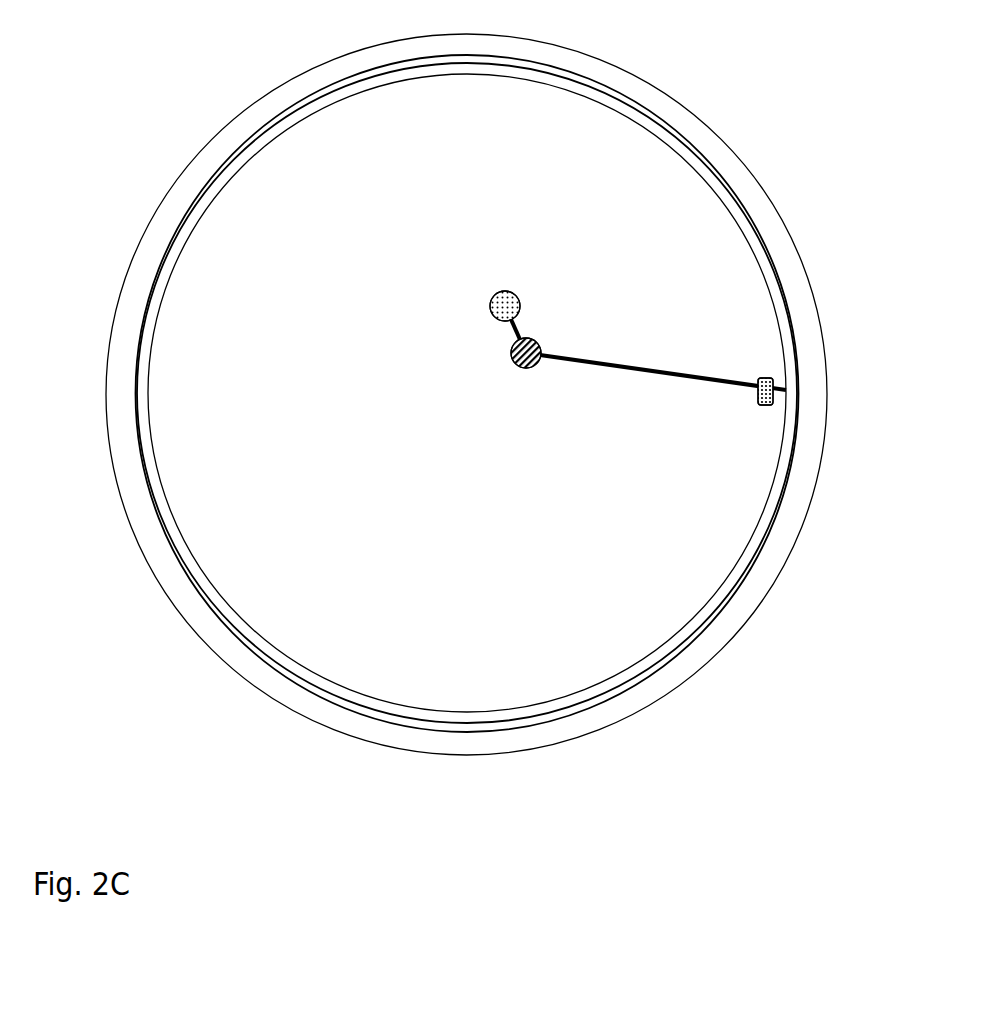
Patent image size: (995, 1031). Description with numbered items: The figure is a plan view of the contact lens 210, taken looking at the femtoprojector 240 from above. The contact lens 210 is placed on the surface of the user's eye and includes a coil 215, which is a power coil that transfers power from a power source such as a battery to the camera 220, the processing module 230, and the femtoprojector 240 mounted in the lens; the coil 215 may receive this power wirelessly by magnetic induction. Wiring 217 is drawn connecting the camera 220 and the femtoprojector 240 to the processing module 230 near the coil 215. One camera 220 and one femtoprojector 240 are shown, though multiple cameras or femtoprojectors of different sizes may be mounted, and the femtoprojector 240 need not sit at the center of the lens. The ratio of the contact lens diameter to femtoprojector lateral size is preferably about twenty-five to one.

The contact lens 210 is at (247, 110).
The coil 215 is at (592, 105).
The wiring 217 is at (650, 365).
The camera 220 is at (494, 295).
The processing module 230 is at (757, 405).
The femtoprojector 240 is at (520, 369).